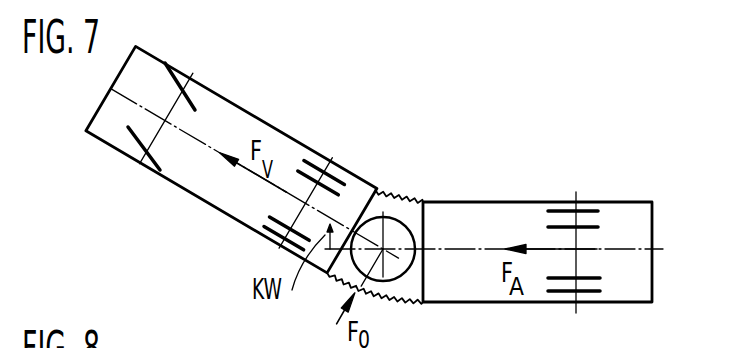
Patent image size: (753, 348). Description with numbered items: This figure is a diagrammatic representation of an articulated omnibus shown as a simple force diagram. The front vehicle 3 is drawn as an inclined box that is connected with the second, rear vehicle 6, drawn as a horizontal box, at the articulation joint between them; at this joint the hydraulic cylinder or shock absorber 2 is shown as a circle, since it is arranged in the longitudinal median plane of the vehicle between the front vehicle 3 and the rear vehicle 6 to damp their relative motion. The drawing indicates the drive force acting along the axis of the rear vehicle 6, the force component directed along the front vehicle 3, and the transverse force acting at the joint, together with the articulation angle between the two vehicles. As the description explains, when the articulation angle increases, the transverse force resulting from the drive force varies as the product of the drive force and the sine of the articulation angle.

The hydraulic cylinder or shock absorber 2 is at (383, 249).
The front vehicle 3 is at (238, 131).
The rear vehicle 6 is at (622, 218).